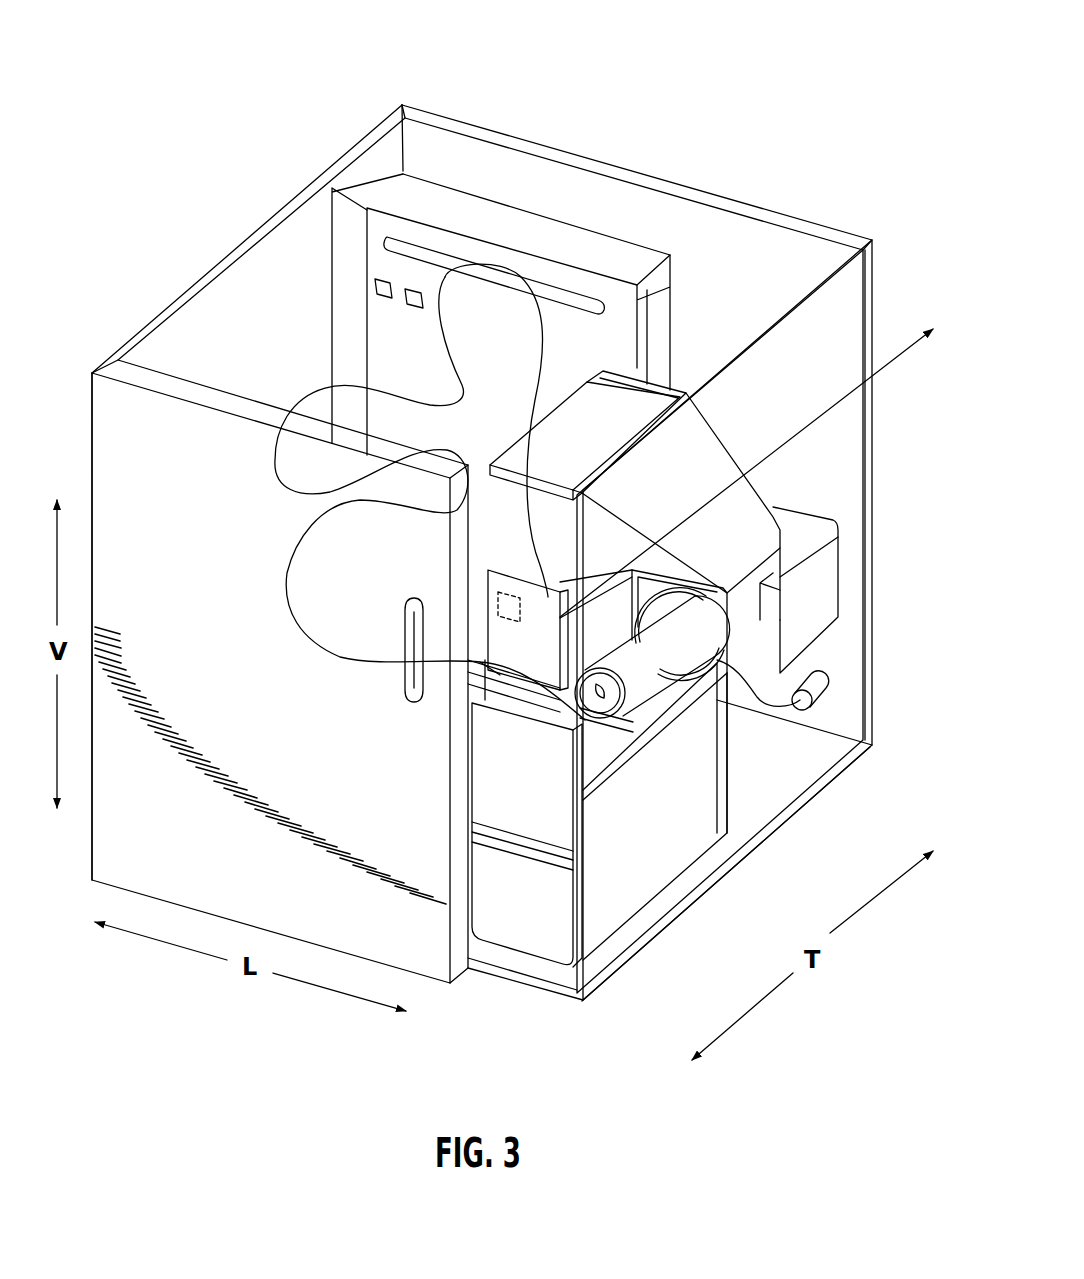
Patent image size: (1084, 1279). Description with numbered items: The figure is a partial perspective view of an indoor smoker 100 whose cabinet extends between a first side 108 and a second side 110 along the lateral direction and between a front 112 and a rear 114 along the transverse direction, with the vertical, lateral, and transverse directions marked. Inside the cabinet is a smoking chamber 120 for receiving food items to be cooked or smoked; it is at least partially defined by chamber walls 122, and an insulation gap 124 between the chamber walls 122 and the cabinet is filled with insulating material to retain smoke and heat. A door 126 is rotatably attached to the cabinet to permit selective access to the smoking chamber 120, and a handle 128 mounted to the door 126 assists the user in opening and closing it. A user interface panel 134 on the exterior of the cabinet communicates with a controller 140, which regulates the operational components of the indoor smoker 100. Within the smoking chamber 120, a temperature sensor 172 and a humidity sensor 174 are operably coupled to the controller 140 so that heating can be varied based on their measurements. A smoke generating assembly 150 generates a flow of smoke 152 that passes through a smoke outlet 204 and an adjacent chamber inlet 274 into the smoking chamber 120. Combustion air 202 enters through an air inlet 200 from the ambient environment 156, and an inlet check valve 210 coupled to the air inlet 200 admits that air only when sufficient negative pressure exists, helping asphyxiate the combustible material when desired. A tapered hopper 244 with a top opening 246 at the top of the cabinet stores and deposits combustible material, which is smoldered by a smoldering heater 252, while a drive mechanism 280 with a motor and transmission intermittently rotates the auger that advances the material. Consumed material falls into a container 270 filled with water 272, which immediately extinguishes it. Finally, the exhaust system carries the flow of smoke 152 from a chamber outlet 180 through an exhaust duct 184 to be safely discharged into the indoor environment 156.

The indoor smoker 100 is at (811, 90).
The first side 108 is at (116, 346).
The second side 110 is at (665, 924).
The front 112 is at (535, 972).
The rear 114 is at (882, 312).
The smoking chamber 120 is at (314, 308).
The chamber walls 122 is at (195, 358).
The insulation gap 124 is at (233, 268).
The door 126 is at (280, 671).
The handle 128 is at (400, 690).
The user interface panel 134 is at (507, 640).
The controller 140 is at (487, 600).
The smoke generating assembly 150 is at (740, 712).
The flow of smoke 152 is at (455, 393).
The indoor environment 156 is at (879, 200).
The temperature sensor 172 is at (372, 286).
The humidity sensor 174 is at (410, 305).
The chamber outlet 180 is at (552, 280).
The exhaust duct 184 is at (641, 257).
The air inlet 200 is at (829, 696).
The flow of combustion air 202 is at (758, 688).
The smoke outlet 204 is at (590, 678).
The inlet check valve 210 is at (818, 678).
The hopper 244 is at (724, 442).
The top opening 246 is at (610, 417).
The smoldering heater 252 is at (625, 722).
The container 270 is at (643, 765).
The water 272 is at (601, 775).
The chamber inlet 274 is at (520, 712).
The drive mechanism 280 is at (805, 530).